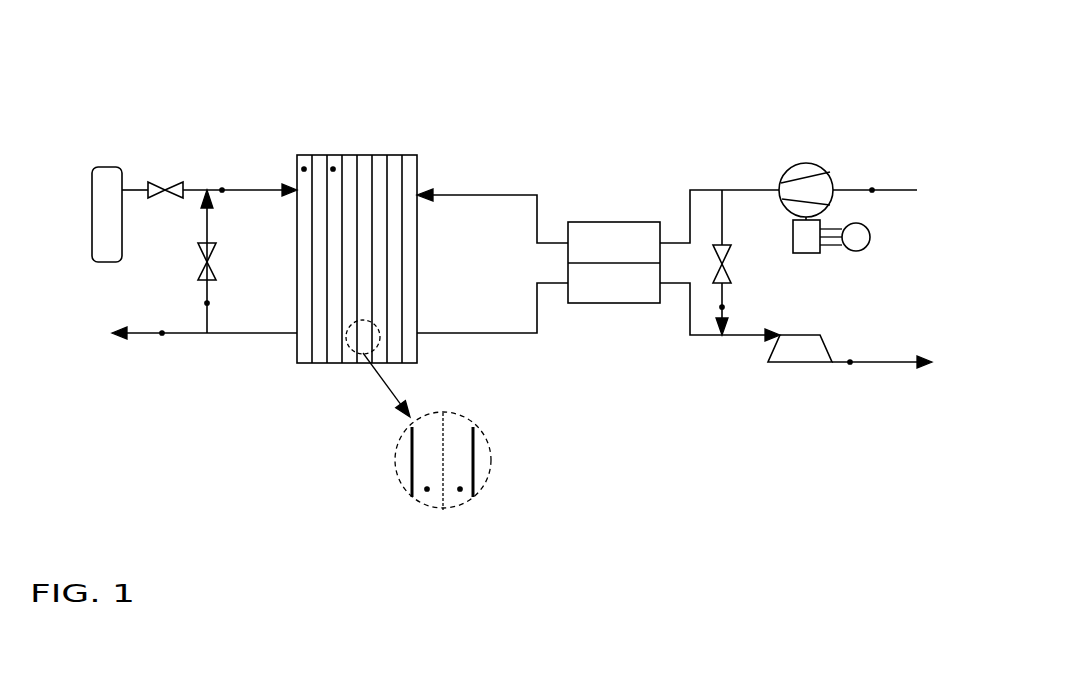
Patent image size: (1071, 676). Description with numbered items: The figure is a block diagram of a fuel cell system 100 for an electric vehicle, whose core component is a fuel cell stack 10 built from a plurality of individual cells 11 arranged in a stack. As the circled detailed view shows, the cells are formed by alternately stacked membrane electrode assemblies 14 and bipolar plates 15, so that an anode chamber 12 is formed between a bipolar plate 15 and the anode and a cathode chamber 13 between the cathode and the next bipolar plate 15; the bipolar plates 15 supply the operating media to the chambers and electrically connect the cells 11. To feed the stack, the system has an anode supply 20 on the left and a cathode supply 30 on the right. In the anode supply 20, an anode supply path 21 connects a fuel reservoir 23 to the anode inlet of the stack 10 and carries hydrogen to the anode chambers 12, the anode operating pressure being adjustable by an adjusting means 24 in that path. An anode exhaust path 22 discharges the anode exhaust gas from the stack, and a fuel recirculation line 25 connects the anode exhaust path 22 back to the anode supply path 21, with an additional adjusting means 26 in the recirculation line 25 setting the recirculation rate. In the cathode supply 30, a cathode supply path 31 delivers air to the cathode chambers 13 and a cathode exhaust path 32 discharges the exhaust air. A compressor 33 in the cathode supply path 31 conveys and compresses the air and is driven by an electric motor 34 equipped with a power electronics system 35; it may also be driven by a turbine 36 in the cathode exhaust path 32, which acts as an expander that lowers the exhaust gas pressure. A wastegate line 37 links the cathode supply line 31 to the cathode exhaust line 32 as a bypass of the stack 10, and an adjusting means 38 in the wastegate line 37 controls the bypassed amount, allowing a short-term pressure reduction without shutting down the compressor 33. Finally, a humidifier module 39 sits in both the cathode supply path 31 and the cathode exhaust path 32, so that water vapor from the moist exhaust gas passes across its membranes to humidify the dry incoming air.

The fuel cell system 100 is at (596, 74).
The fuel cell stack 10 is at (335, 110).
The individual cells 11 is at (333, 169).
The anode chamber 12 is at (426, 493).
The cathode chamber 13 is at (462, 493).
The membrane electrode assembly 14 is at (444, 496).
The bipolar plate 15 is at (410, 476).
The anode supply 20 is at (166, 93).
The anode supply path 21 is at (222, 190).
The anode exhaust path 22 is at (162, 333).
The fuel reservoir 23 is at (108, 182).
The adjusting means 24 is at (153, 190).
The fuel recirculation line 25 is at (207, 303).
The additional adjusting means 26 is at (207, 250).
The cathode supply 30 is at (642, 127).
The cathode supply path 31 is at (872, 190).
The cathode exhaust path 32 is at (852, 358).
The compressor 33 is at (800, 170).
The electric motor 34 is at (803, 242).
The power electronics system 35 is at (861, 237).
The turbine 36 is at (807, 352).
The wastegate line 37 is at (720, 311).
The adjusting means 38 is at (727, 278).
The humidifier module 39 is at (622, 287).